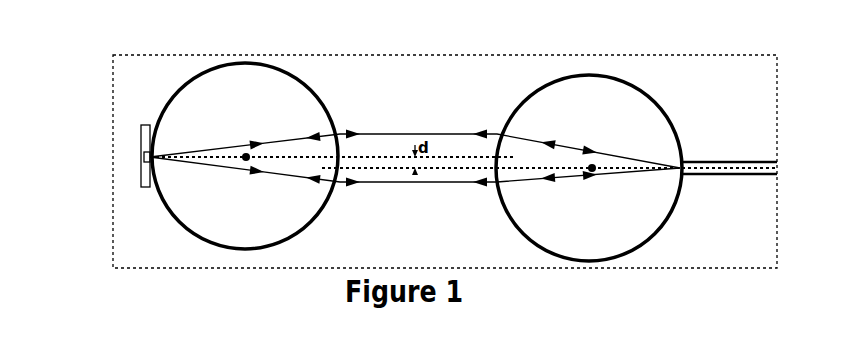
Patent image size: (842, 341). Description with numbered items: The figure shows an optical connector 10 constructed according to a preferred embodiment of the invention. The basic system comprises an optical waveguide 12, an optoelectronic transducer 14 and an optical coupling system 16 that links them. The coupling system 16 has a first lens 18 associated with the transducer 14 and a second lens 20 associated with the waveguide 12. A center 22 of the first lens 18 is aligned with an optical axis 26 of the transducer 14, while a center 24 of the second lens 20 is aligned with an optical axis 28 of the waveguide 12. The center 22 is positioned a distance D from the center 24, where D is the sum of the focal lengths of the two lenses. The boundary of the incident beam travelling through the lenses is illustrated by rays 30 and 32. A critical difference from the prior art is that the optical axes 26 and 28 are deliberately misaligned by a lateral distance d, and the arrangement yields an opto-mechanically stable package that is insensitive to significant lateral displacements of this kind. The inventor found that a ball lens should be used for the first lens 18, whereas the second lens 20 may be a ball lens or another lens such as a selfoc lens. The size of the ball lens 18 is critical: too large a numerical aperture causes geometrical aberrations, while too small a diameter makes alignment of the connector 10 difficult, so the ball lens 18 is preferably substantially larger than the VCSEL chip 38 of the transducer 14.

The connector 10 is at (100, 105).
The optical waveguide 12 is at (703, 162).
The optoelectronic transducer 14 is at (147, 155).
The optical coupling system 16 is at (478, 248).
The first lens 18 is at (198, 100).
The second lens 20 is at (560, 113).
The center of first lens 22 is at (246, 157).
The center of second lens 24 is at (592, 168).
The optical axis of transducer 26 is at (268, 157).
The optical axis of waveguide 28 is at (713, 168).
The ray 30 is at (385, 183).
The ray 32 is at (377, 133).
The VCSEL chip 38 is at (145, 125).